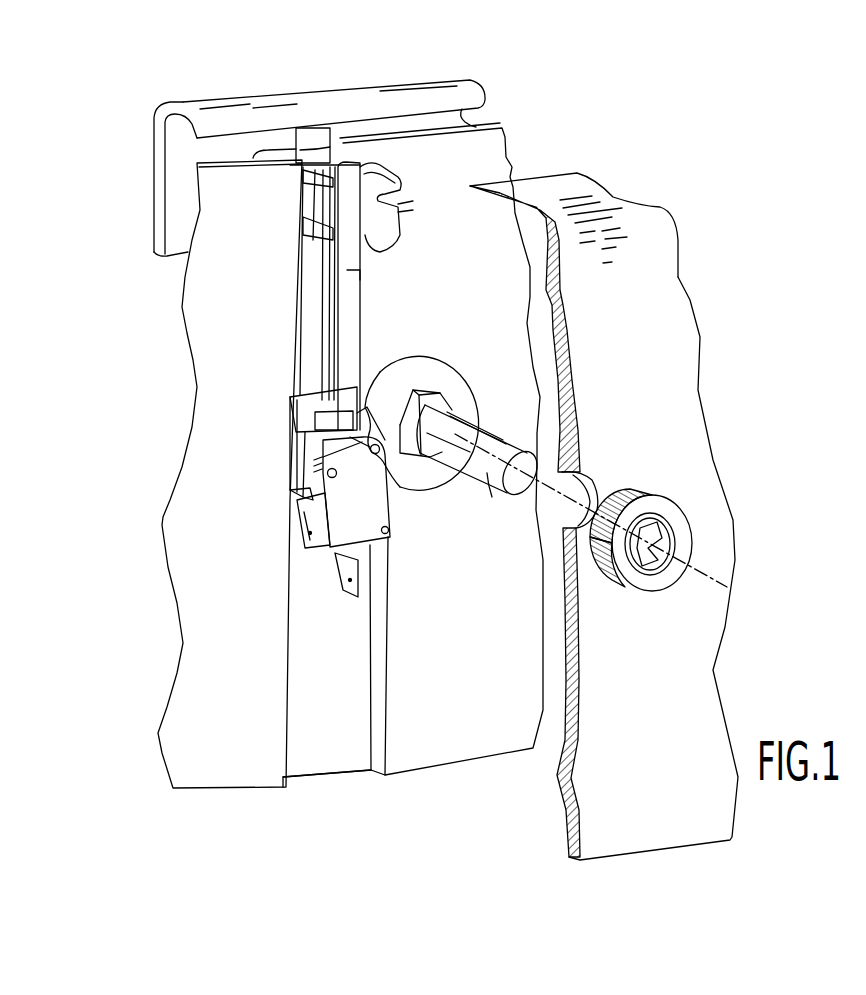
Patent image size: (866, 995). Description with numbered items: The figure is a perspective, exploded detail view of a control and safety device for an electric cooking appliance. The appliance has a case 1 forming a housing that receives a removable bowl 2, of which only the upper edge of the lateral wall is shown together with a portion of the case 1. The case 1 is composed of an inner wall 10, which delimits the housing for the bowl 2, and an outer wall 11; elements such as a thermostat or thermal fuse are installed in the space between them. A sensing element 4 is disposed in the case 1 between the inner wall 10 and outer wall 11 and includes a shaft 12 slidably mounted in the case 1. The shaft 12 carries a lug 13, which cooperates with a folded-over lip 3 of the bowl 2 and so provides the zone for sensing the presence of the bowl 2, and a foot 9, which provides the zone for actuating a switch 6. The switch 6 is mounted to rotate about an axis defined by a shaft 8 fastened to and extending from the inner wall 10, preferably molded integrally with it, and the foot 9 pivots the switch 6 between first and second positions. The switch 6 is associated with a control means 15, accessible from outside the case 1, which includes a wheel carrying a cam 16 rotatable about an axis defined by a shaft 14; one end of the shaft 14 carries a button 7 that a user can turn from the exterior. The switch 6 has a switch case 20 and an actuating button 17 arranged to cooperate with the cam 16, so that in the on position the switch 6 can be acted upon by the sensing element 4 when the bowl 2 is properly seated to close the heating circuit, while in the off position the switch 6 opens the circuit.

The case 1 is at (544, 165).
The removable bowl 2 is at (160, 174).
The folded-over lip 3 is at (465, 92).
The sensing element 4 is at (272, 413).
The switch 6 is at (323, 561).
The button 7 is at (655, 583).
The shaft 8 is at (390, 532).
The foot 9 is at (307, 461).
The inner wall 10 is at (427, 737).
The outer wall 11 is at (683, 700).
The shaft 12 is at (350, 247).
The lug 13 is at (318, 145).
The shaft 14 is at (490, 490).
The control means 15 is at (433, 345).
The cam 16 is at (416, 482).
The actuating button 17 is at (330, 484).
The switch case 20 is at (360, 530).